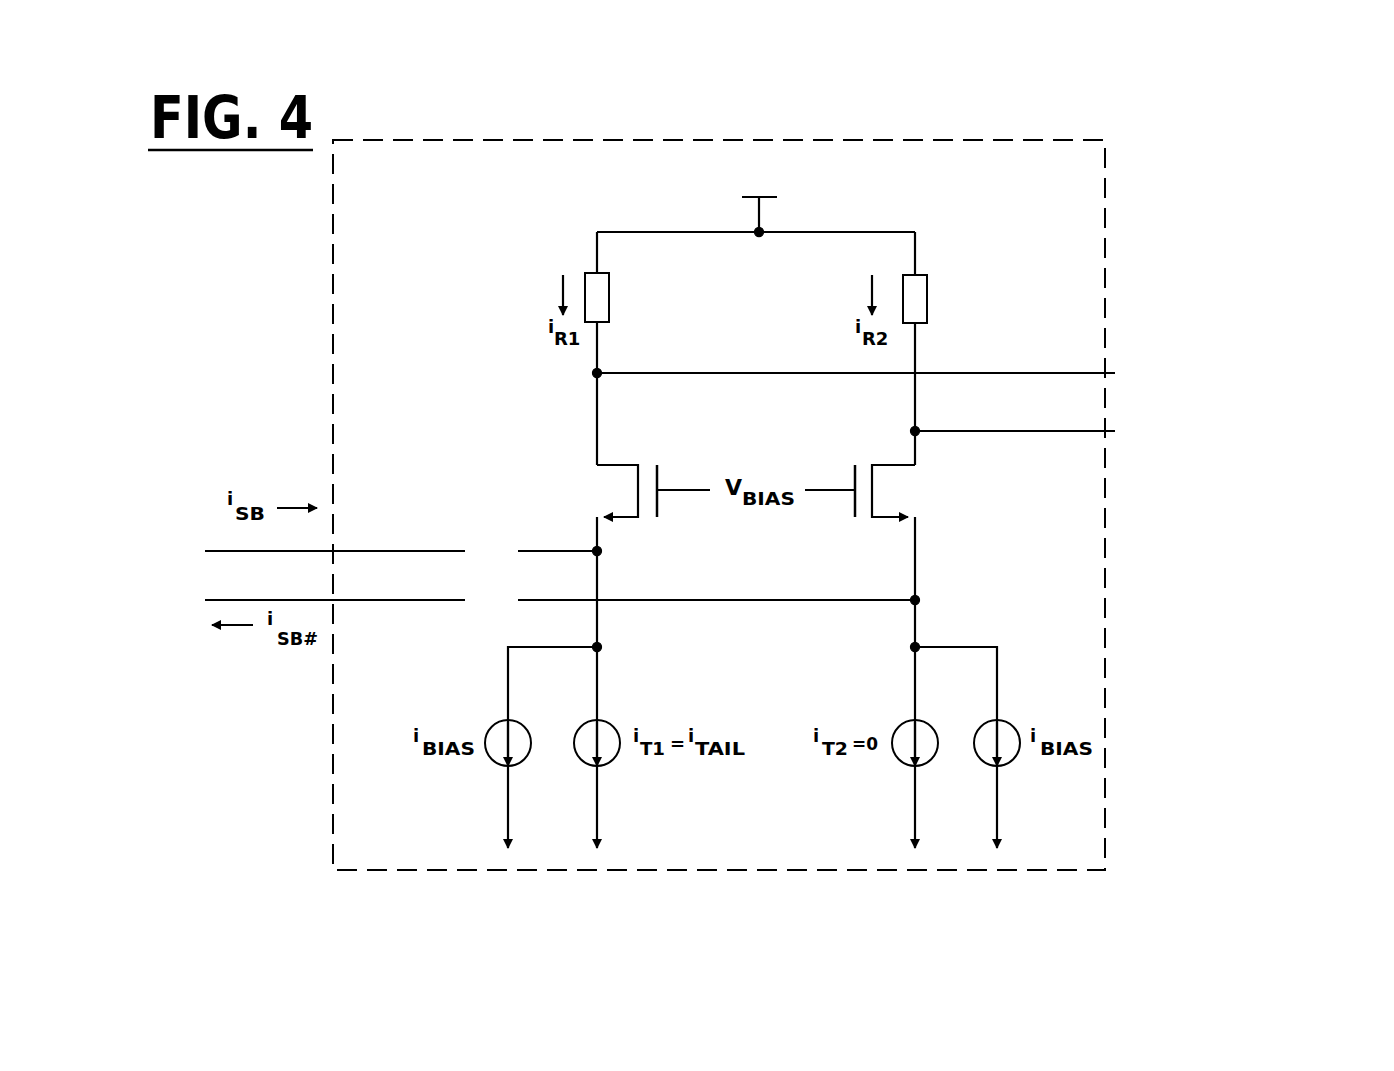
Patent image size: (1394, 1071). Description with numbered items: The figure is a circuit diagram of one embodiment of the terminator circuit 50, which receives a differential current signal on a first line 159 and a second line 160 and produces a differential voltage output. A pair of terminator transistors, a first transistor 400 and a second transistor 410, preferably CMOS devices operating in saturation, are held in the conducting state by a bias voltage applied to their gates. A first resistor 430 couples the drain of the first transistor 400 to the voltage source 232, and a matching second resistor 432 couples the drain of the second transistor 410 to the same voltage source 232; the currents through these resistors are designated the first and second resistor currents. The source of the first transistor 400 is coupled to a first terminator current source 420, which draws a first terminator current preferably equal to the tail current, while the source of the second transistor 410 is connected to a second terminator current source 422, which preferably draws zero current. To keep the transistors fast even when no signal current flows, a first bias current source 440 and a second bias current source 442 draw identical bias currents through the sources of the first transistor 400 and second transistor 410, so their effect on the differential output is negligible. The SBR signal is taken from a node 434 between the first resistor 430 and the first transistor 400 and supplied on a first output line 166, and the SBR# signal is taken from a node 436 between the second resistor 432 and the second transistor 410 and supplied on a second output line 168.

The terminator circuit 50 is at (483, 170).
The voltage source 232 is at (813, 197).
The first resistor 430 is at (610, 293).
The second resistor 432 is at (927, 297).
The node 434 is at (600, 370).
The node 436 is at (912, 430).
The first transistor 400 is at (620, 463).
The second transistor 410 is at (902, 465).
The first output line 166 is at (1208, 373).
The second output line 168 is at (1208, 431).
The first line 159 is at (338, 550).
The second line 160 is at (491, 599).
The first bias current source 440 is at (493, 722).
The first terminator current source 420 is at (613, 723).
The second terminator current source 422 is at (898, 722).
The second bias current source 442 is at (1009, 722).